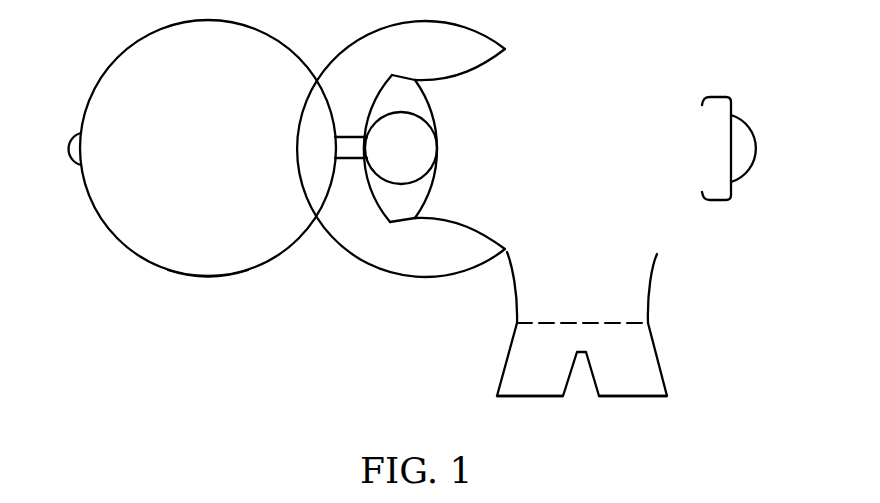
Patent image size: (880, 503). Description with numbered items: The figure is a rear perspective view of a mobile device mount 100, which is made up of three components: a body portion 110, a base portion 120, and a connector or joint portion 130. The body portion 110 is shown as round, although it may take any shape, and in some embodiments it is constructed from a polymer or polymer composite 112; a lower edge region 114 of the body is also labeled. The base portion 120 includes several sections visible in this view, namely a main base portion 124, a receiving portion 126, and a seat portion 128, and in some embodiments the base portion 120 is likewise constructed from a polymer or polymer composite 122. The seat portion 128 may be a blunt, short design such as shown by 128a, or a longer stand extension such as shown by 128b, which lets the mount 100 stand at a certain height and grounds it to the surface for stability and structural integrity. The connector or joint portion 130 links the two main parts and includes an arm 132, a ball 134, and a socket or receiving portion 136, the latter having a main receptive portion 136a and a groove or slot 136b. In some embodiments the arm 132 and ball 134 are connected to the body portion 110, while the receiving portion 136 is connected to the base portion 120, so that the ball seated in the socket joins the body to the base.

The mobile device mount 100 is at (96, 56).
The body portion 110 is at (100, 247).
The polymer or polymer composite 112 is at (226, 108).
The bottom of first body 114 is at (207, 278).
The base portion 120 is at (668, 226).
The polymer or polymer composite 122 is at (599, 167).
The main base portion 124 is at (672, 67).
The receiving portion 126 is at (762, 123).
The seat portion 128 is at (517, 349).
The blunt, short seat design 128a is at (603, 322).
The stand extension 128b is at (528, 398).
The connector or joint portion 130 is at (448, 255).
The arm 132 is at (358, 152).
The ball 134 is at (433, 150).
The socket or receiving portion 136 is at (401, 80).
The main receptive portion 136a is at (434, 119).
The groove or slot 136b is at (367, 127).